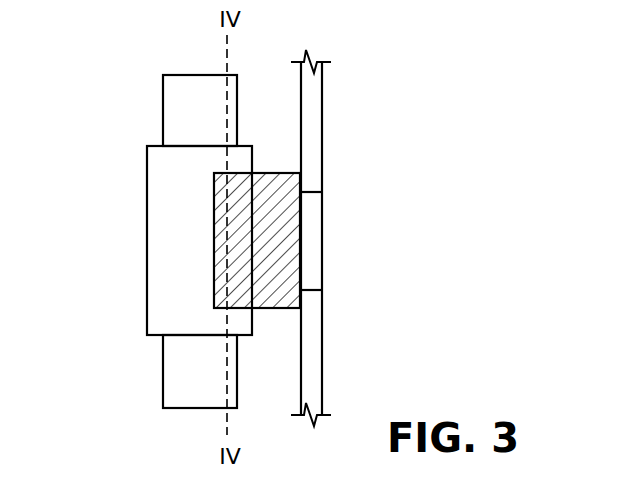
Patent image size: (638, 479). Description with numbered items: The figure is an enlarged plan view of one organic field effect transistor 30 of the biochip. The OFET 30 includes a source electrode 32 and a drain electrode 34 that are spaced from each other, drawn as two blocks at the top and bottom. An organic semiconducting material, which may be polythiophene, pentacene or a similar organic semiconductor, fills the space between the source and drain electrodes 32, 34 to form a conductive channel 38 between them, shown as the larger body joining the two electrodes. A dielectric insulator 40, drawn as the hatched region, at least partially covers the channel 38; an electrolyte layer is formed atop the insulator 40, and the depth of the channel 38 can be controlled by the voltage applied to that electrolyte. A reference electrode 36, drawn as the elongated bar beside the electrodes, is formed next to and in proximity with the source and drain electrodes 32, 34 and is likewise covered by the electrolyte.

The organic field effect transistor 30 is at (408, 90).
The source electrode 32 is at (168, 103).
The drain electrode 34 is at (170, 369).
The reference electrode 36 is at (318, 240).
The conductive channel 38 is at (158, 242).
The dielectric insulator 40 is at (268, 196).